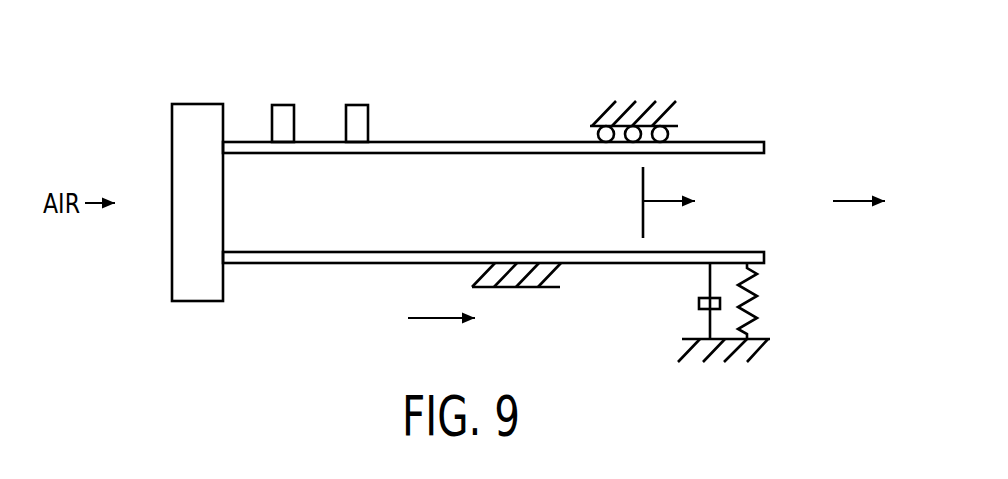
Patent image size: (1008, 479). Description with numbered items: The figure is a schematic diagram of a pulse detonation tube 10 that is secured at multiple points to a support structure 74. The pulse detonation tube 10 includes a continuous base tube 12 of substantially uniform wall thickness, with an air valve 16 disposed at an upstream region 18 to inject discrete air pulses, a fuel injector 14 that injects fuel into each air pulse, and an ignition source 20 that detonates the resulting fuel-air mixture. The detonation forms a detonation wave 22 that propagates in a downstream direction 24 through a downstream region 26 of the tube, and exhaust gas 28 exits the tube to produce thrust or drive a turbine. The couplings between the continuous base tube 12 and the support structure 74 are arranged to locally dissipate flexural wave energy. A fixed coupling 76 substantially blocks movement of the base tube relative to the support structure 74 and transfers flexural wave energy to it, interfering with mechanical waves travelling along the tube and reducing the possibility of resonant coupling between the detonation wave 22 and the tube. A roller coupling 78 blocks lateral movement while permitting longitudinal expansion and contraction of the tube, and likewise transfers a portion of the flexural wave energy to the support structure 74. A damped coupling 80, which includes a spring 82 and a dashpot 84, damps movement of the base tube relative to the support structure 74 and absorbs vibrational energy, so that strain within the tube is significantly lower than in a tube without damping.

The pulse detonation tube 10 is at (513, 36).
The continuous base tube 12 is at (483, 142).
The fuel injector 14 is at (285, 104).
The air valve 16 is at (196, 104).
The upstream region 18 is at (256, 62).
The ignition source 20 is at (359, 104).
The detonation wave 22 is at (643, 183).
The downstream direction 24 is at (424, 316).
The downstream region 26 is at (666, 64).
The exhaust gas 28 is at (860, 201).
The support structure 74 is at (672, 127).
The fixed coupling 76 is at (572, 278).
The roller coupling 78 is at (578, 132).
The damped coupling 80 is at (775, 272).
The spring 82 is at (752, 304).
The dashpot 84 is at (699, 303).